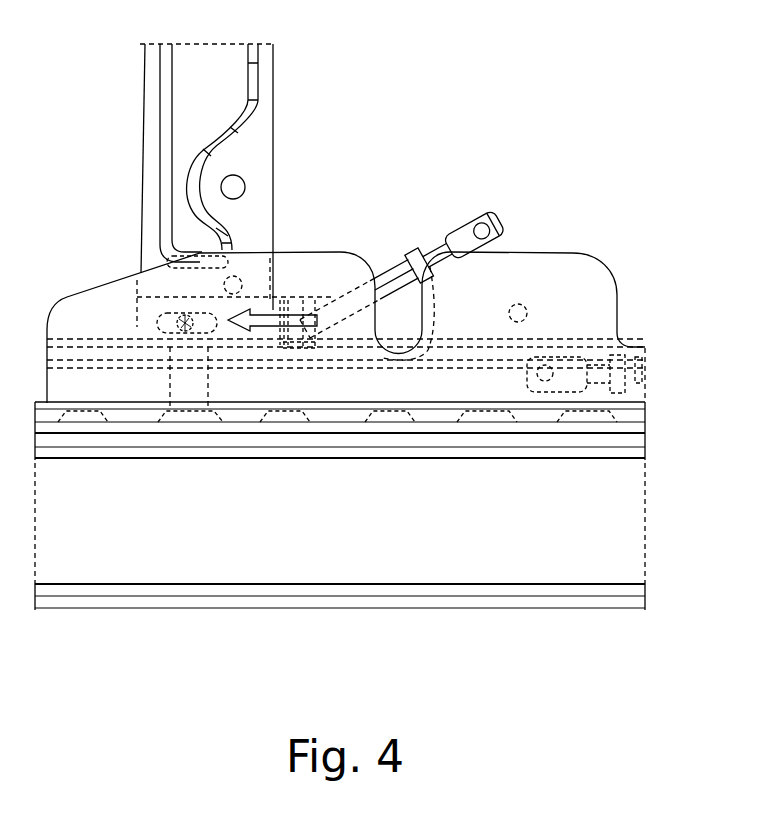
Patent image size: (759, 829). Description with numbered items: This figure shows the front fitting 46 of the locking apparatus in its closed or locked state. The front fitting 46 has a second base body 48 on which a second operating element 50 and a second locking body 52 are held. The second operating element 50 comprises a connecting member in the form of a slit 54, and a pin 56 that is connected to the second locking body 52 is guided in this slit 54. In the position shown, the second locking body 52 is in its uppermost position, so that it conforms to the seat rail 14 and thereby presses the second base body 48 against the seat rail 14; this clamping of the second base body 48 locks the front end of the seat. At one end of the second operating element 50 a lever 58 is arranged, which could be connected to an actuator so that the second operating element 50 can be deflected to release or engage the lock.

The seat rail 14 is at (632, 402).
The front fitting 46 is at (460, 90).
The second base body 48 is at (137, 318).
The second operating element 50 is at (277, 310).
The second locking body 52 is at (193, 425).
The slit 54 is at (207, 327).
The pin 56 is at (183, 325).
The lever 58 is at (436, 238).